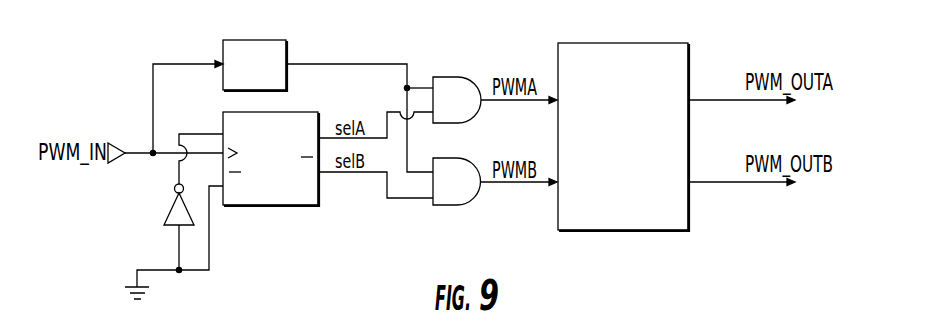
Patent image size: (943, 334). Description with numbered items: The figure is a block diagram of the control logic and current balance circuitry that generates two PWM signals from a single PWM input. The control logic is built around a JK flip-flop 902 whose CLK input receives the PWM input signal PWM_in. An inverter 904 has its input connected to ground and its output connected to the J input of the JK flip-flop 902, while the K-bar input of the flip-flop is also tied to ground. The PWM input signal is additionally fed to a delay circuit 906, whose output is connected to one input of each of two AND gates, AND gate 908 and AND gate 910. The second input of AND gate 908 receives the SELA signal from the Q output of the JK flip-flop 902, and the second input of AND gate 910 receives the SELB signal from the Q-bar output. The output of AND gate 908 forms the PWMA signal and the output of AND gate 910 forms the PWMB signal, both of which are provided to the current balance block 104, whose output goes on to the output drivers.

The current balance block 104 is at (622, 43).
The JK flip-flop 902 is at (278, 206).
The inverter 904 is at (167, 210).
The delay circuit 906 is at (265, 38).
The AND gate 908 is at (442, 76).
The AND gate 910 is at (445, 206).